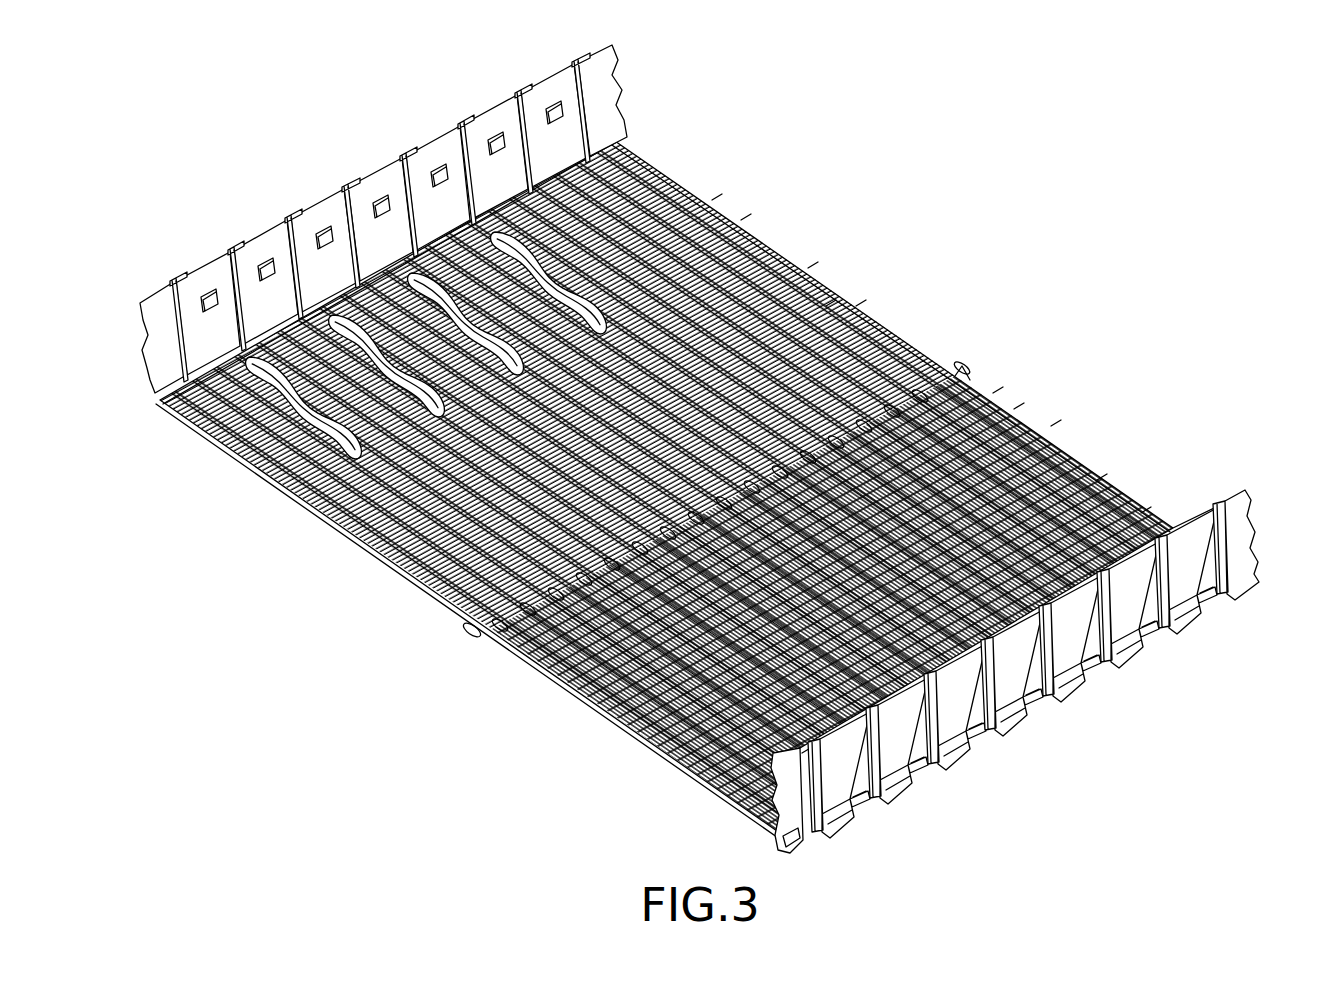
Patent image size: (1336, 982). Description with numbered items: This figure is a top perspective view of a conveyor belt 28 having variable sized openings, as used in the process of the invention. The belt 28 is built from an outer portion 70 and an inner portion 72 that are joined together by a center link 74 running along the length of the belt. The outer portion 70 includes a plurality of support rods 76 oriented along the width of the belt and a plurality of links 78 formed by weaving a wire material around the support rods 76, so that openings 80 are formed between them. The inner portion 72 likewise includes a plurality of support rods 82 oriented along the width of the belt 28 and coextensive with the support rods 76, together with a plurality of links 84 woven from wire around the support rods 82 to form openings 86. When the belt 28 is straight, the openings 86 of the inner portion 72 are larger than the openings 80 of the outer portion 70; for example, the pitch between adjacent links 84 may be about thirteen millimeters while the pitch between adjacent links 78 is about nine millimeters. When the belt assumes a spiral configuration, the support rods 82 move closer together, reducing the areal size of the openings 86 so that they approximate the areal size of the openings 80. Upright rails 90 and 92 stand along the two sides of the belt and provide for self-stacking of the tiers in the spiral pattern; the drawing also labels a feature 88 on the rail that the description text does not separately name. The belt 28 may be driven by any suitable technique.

The conveyor belt 28 is at (672, 132).
The outer portion 70 is at (1056, 423).
The inner portion 72 is at (716, 198).
The center link 74 is at (961, 365).
The support rods 76 is at (1102, 477).
The links 78 is at (1019, 406).
The openings 80 is at (1146, 510).
The support rods 82 is at (745, 217).
The links 84 is at (830, 304).
The openings 86 is at (861, 303).
The opening in side guard plate 88 is at (557, 106).
The upright rail 90 is at (368, 326).
The upright rail 92 is at (1232, 522).